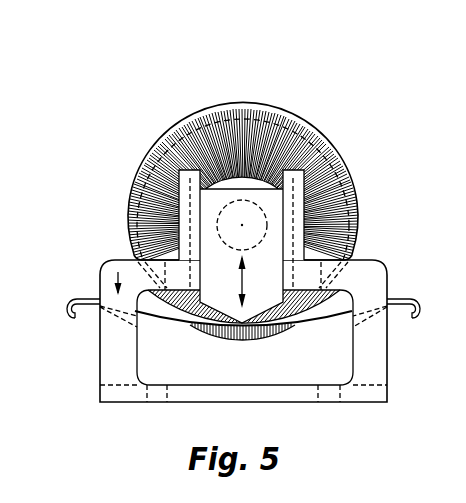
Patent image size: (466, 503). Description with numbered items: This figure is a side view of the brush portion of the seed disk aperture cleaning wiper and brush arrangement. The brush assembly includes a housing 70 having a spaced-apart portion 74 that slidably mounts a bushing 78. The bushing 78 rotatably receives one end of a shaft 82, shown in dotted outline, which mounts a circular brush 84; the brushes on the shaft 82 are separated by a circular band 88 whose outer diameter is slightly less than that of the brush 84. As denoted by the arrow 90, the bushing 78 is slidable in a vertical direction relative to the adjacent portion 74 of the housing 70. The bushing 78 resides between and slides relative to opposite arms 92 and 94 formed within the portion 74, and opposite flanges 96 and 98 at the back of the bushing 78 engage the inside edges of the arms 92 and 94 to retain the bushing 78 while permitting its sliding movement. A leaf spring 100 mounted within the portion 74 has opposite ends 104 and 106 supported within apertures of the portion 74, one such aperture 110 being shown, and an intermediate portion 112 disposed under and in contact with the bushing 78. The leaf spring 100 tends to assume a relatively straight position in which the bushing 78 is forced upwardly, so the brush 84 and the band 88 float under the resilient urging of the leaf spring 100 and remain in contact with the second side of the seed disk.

The housing 70 is at (390, 376).
The spaced-apart portion 74 is at (370, 273).
The bushing 78 is at (235, 271).
The shaft 82 is at (255, 216).
The circular brush 84 is at (293, 118).
The circular band 88 is at (238, 112).
The arrow 90 is at (245, 282).
The arm 92 is at (319, 144).
The arm 94 is at (172, 140).
The flange 96 is at (356, 211).
The flange 98 is at (138, 188).
The leaf spring 100 is at (413, 297).
The end of leaf spring 104 is at (393, 318).
The end of leaf spring 106 is at (92, 312).
The aperture 110 is at (118, 272).
The intermediate portion of leaf spring 112 is at (231, 336).